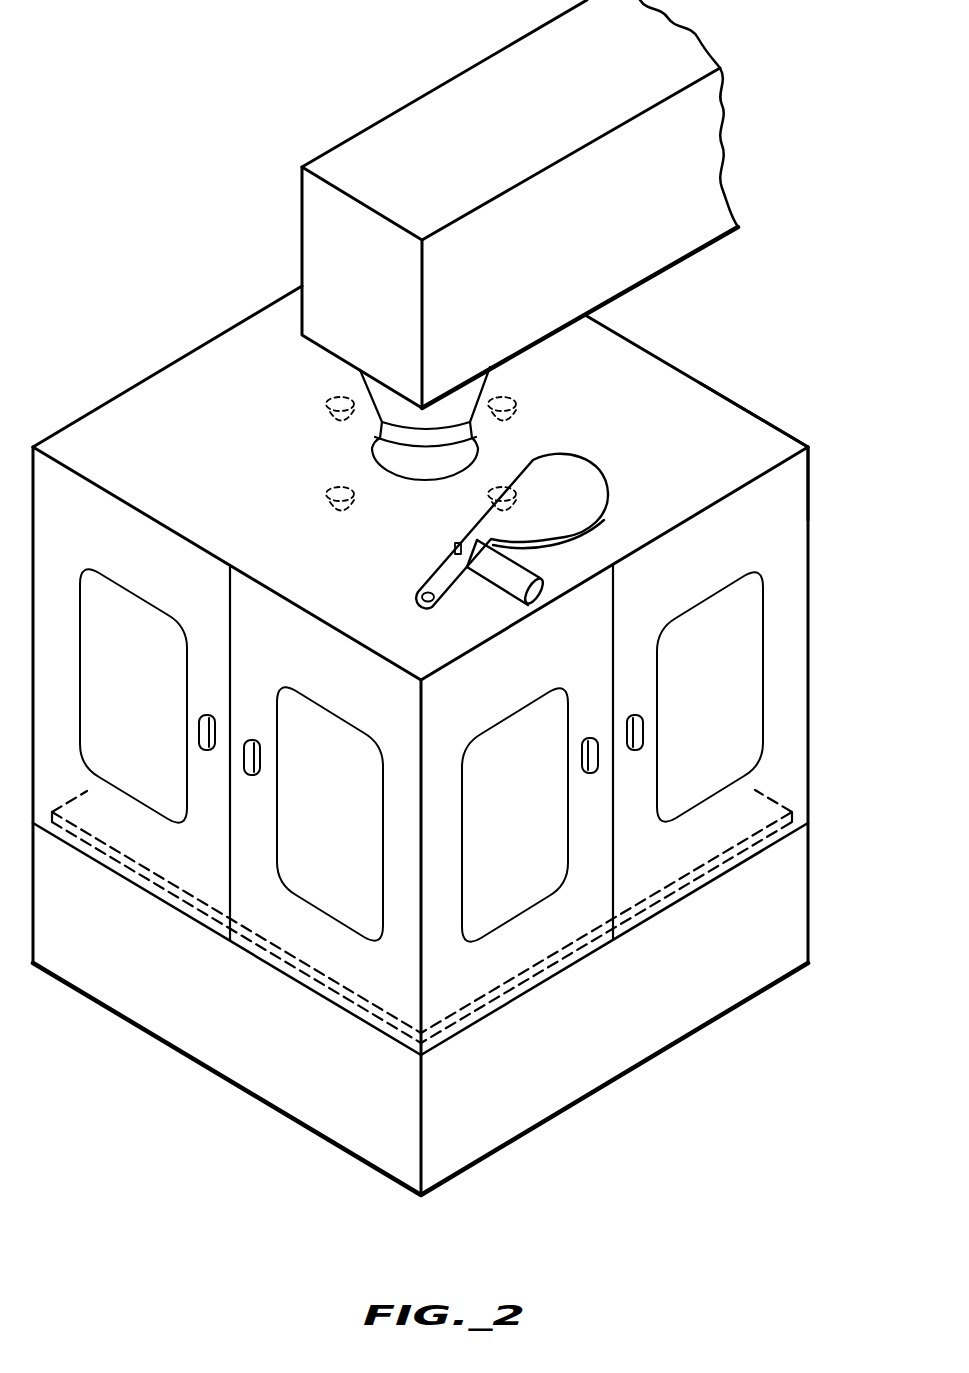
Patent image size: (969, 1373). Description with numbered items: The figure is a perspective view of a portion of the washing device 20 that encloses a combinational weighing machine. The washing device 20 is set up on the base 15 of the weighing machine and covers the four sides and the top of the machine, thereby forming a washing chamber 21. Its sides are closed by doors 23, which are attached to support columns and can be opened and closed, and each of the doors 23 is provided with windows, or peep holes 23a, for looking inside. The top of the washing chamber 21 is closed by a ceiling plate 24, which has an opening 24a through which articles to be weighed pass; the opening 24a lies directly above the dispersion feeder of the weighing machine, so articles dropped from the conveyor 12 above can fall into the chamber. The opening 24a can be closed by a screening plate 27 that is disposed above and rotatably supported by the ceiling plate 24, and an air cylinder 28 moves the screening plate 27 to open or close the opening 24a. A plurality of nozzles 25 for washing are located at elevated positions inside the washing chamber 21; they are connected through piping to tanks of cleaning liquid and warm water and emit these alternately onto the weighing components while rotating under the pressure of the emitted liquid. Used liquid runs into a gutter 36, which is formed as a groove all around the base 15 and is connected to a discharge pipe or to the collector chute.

The conveyor 12 is at (487, 67).
The base 15 is at (590, 1070).
The washing device 20 is at (627, 348).
The washing chamber 21 is at (743, 425).
The doors 23 is at (790, 533).
The peep holes 23a is at (742, 660).
The ceiling plate 24 is at (665, 377).
The opening 24a is at (435, 467).
The nozzles 25 is at (350, 520).
The screening plate 27 is at (583, 485).
The air cylinder 28 is at (498, 577).
The gutter 36 is at (62, 842).